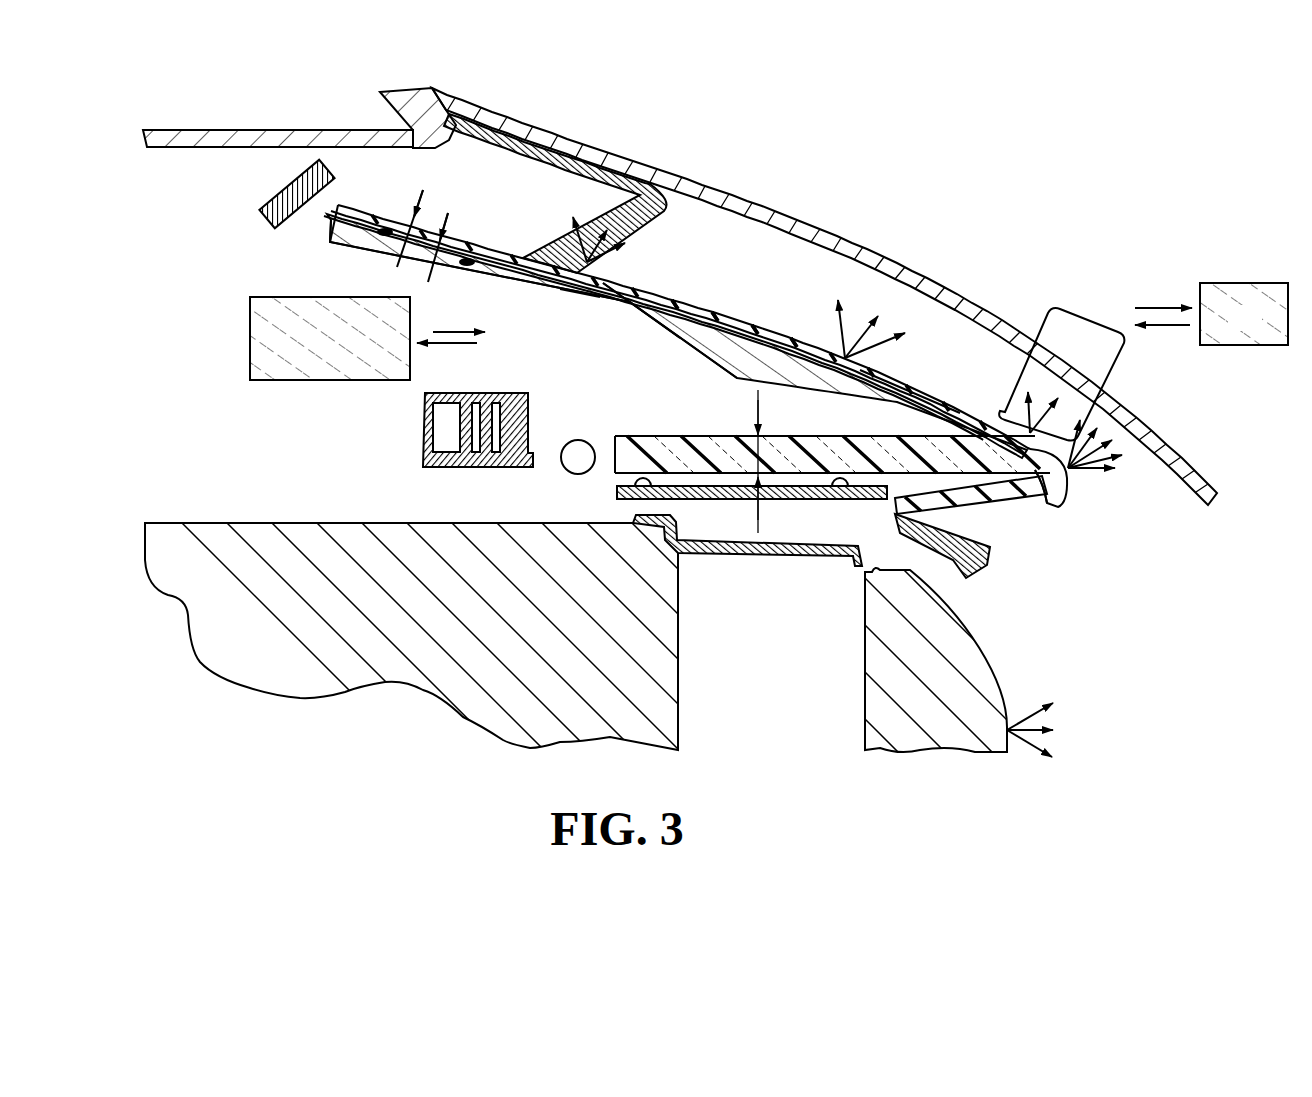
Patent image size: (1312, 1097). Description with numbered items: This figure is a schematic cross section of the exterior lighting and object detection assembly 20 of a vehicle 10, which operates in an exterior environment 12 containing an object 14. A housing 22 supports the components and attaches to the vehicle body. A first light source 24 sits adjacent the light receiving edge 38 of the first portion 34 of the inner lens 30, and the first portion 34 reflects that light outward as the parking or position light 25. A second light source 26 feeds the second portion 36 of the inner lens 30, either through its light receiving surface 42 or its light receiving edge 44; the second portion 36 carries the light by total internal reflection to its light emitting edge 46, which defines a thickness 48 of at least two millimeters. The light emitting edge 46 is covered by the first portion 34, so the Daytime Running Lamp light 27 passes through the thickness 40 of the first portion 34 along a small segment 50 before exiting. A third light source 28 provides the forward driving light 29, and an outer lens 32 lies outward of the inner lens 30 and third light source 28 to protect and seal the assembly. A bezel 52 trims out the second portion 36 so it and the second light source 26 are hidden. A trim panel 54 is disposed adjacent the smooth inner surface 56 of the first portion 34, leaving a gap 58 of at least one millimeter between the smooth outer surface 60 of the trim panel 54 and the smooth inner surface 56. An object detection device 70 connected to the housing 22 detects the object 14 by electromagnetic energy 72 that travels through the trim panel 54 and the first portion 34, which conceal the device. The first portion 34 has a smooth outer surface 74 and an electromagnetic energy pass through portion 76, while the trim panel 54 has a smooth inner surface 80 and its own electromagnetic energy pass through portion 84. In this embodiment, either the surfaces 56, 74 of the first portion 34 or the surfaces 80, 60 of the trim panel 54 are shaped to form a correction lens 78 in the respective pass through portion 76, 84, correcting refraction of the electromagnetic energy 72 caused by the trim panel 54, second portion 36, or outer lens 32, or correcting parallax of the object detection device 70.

The vehicle 10 is at (553, 97).
The exterior environment 12 is at (865, 124).
The object 14 is at (1244, 314).
The exterior lighting and object detection assembly 20 is at (997, 190).
The housing 22 is at (425, 430).
The first light source 24 is at (327, 203).
The parking or position light 25 is at (627, 243).
The second light source 26 is at (617, 482).
The Daytime Running Lamp light 27 is at (1048, 395).
The third light source 28 is at (982, 648).
The forward driving light 29 is at (1037, 738).
The inner lens 30 is at (897, 380).
The outer lens 32 is at (913, 272).
The first portion 34 is at (660, 293).
The second portion 36 is at (667, 447).
The light receiving edge 38 is at (338, 206).
The thickness 40 is at (423, 190).
The light receiving surface 42 is at (773, 480).
The light receiving edge 44 is at (607, 450).
The light emitting edge 46 is at (1050, 507).
The thickness 48 is at (757, 415).
The segment 50 is at (1083, 310).
The bezel 52 is at (1002, 512).
The trim panel 54 is at (527, 285).
The smooth inner surface 56 is at (497, 253).
The gap 58 is at (433, 272).
The smooth outer surface 60 is at (387, 233).
The object detection device 70 is at (258, 340).
The electromagnetic energy 72 is at (452, 328).
The smooth outer surface 74 is at (707, 308).
The electromagnetic energy pass through portion 76 is at (750, 327).
The correction lens 78 is at (663, 320).
The smooth inner surface 80 is at (583, 300).
The electromagnetic energy pass through portion 84 is at (713, 343).